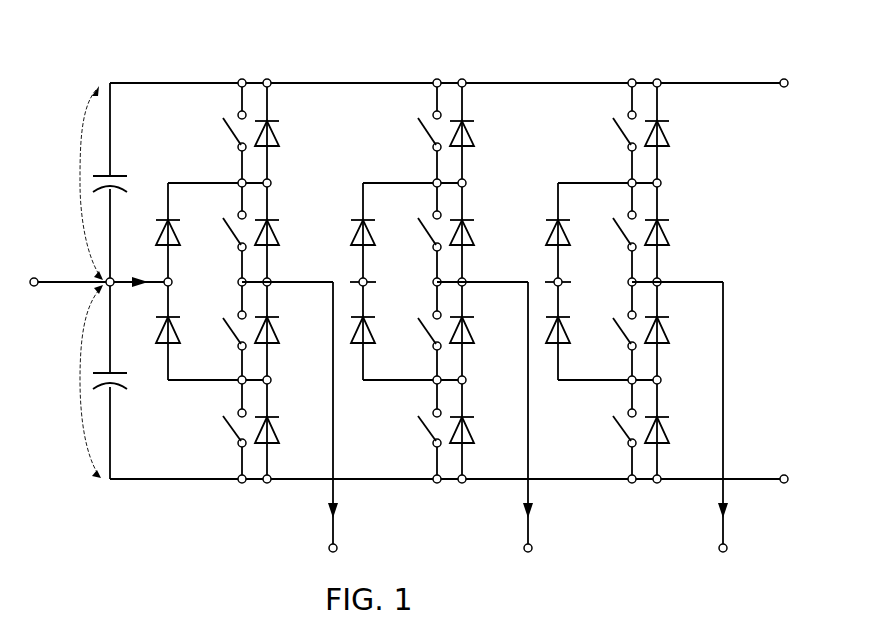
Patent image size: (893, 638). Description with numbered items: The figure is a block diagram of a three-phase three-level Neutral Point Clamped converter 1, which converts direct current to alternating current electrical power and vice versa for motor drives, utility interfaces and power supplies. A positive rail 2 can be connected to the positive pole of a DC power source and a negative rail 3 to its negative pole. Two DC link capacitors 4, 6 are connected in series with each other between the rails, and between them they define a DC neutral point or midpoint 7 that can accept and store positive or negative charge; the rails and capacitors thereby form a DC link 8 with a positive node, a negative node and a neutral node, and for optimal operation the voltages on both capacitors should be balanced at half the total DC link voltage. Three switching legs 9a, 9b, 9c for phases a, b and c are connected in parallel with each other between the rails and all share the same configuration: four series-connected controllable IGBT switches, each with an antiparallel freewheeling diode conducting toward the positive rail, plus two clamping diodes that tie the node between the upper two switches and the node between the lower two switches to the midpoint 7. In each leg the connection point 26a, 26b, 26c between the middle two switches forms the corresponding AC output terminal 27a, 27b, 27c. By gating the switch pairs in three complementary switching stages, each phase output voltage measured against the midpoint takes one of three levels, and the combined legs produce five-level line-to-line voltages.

The three-level Neutral Point Clamped converter 1 is at (88, 64).
The positive rail 2 is at (182, 81).
The negative rail 3 is at (180, 481).
The DC link capacitor 4 is at (120, 175).
The DC link capacitor 6 is at (125, 385).
The midpoint 7 is at (34, 278).
The DC link 8 is at (62, 121).
The switching leg 9a is at (305, 158).
The switching leg 9b is at (503, 158).
The switching leg 9c is at (700, 158).
The connection point 26a is at (280, 281).
The connection point 26b is at (475, 281).
The connection point 26c is at (670, 281).
The AC output terminal 27a is at (328, 548).
The AC output terminal 27b is at (523, 548).
The AC output terminal 27c is at (718, 548).